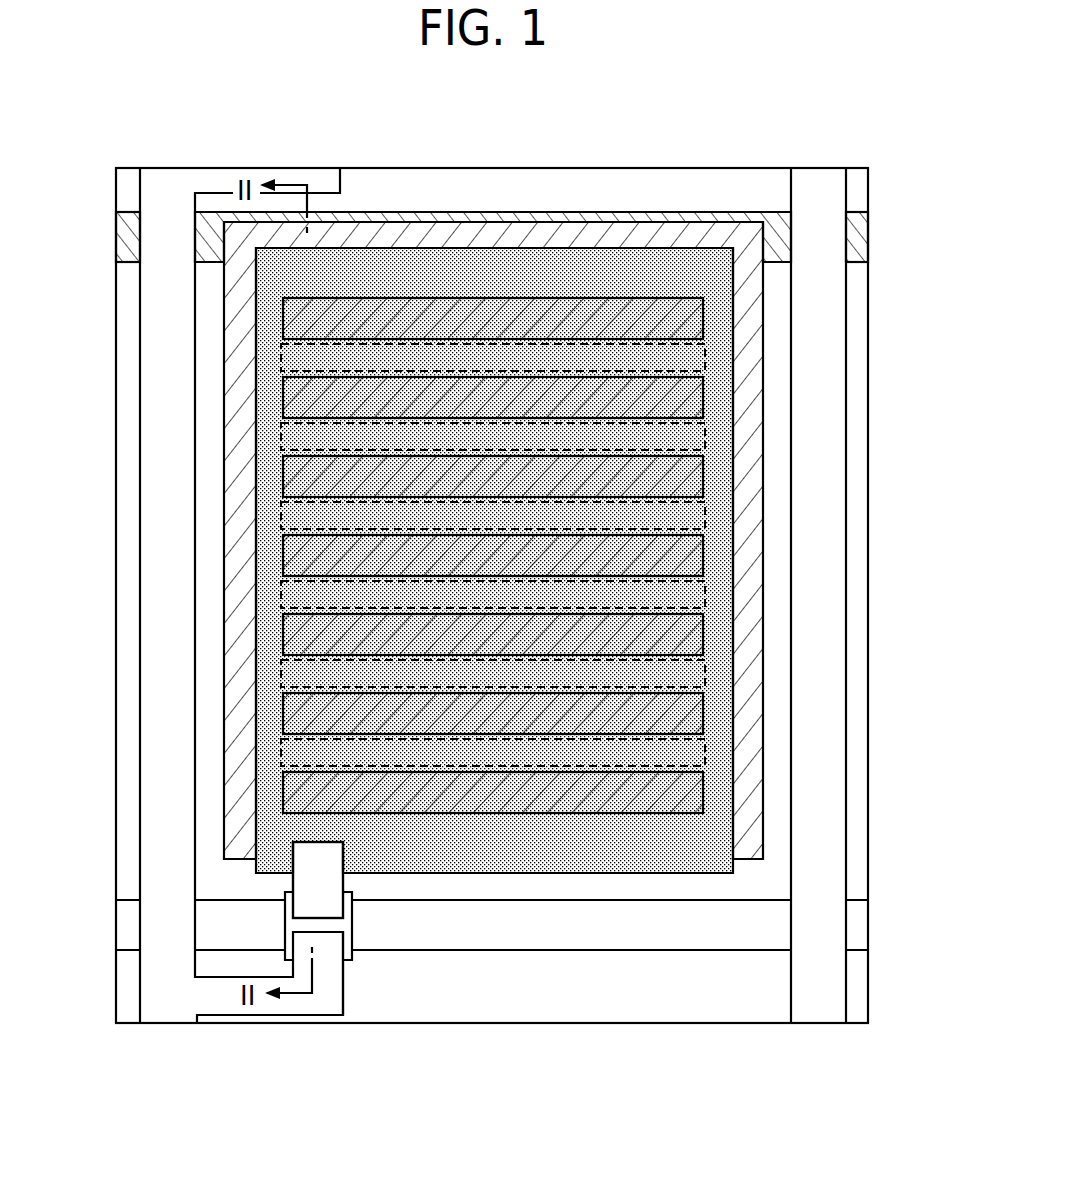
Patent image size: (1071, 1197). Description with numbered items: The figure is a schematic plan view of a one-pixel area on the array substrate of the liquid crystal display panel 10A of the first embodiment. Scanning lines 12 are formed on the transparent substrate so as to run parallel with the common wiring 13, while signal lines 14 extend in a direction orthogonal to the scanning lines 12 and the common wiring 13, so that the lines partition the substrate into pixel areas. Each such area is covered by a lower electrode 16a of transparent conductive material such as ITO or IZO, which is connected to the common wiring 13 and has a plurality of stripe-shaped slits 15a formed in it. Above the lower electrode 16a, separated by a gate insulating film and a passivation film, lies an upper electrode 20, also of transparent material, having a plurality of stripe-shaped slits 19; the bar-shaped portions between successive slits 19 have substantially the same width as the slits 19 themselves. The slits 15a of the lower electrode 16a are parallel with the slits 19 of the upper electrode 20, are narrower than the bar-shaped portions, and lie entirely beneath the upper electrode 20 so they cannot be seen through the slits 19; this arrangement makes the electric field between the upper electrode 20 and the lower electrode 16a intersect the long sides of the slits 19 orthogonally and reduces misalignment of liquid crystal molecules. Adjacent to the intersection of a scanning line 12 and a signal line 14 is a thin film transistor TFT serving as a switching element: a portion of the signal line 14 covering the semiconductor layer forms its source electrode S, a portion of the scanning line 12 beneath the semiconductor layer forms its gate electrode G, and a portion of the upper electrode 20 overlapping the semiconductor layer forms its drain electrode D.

The liquid crystal display panel 10A is at (375, 90).
The scanning line 12 is at (223, 924).
The common wiring 13 is at (845, 232).
The signal line 14 is at (170, 570).
The stripe-shaped slit 15a is at (585, 357).
The lower electrode 16a is at (233, 442).
The stripe-shaped slit 19 is at (620, 407).
The upper electrode 20 is at (665, 593).
The source electrode S is at (330, 1007).
The gate electrode G is at (352, 903).
The drain electrode D is at (338, 880).
The thin film transistor TFT is at (407, 1088).